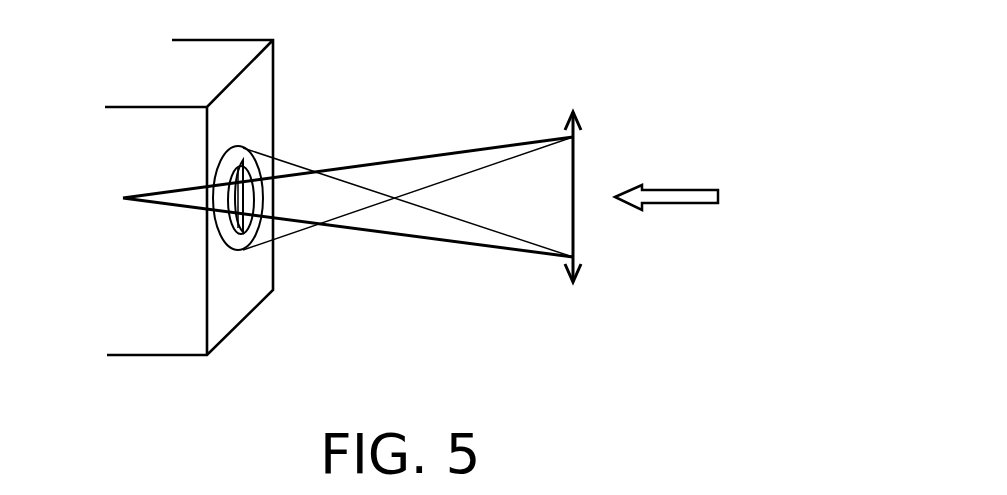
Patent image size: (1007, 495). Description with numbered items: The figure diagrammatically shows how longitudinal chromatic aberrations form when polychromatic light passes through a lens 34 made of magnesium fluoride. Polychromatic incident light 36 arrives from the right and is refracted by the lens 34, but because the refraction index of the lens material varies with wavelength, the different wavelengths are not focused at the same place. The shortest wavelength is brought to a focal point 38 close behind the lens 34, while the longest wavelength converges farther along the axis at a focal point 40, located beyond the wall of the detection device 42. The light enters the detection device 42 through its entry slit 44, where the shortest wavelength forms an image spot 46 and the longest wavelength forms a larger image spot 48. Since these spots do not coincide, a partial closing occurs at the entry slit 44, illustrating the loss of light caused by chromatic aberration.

The lens 34 is at (575, 162).
The polychromatic incident light 36 is at (692, 203).
The focal point of light with the shortest wavelength 38 is at (392, 197).
The focal point of light with the longest wavelength 40 is at (120, 202).
The detection device 42 is at (170, 345).
The entry slit 44 is at (246, 200).
The image spot for the shortest wavelength 46 is at (225, 166).
The image spot for the longest wavelength 48 is at (233, 212).